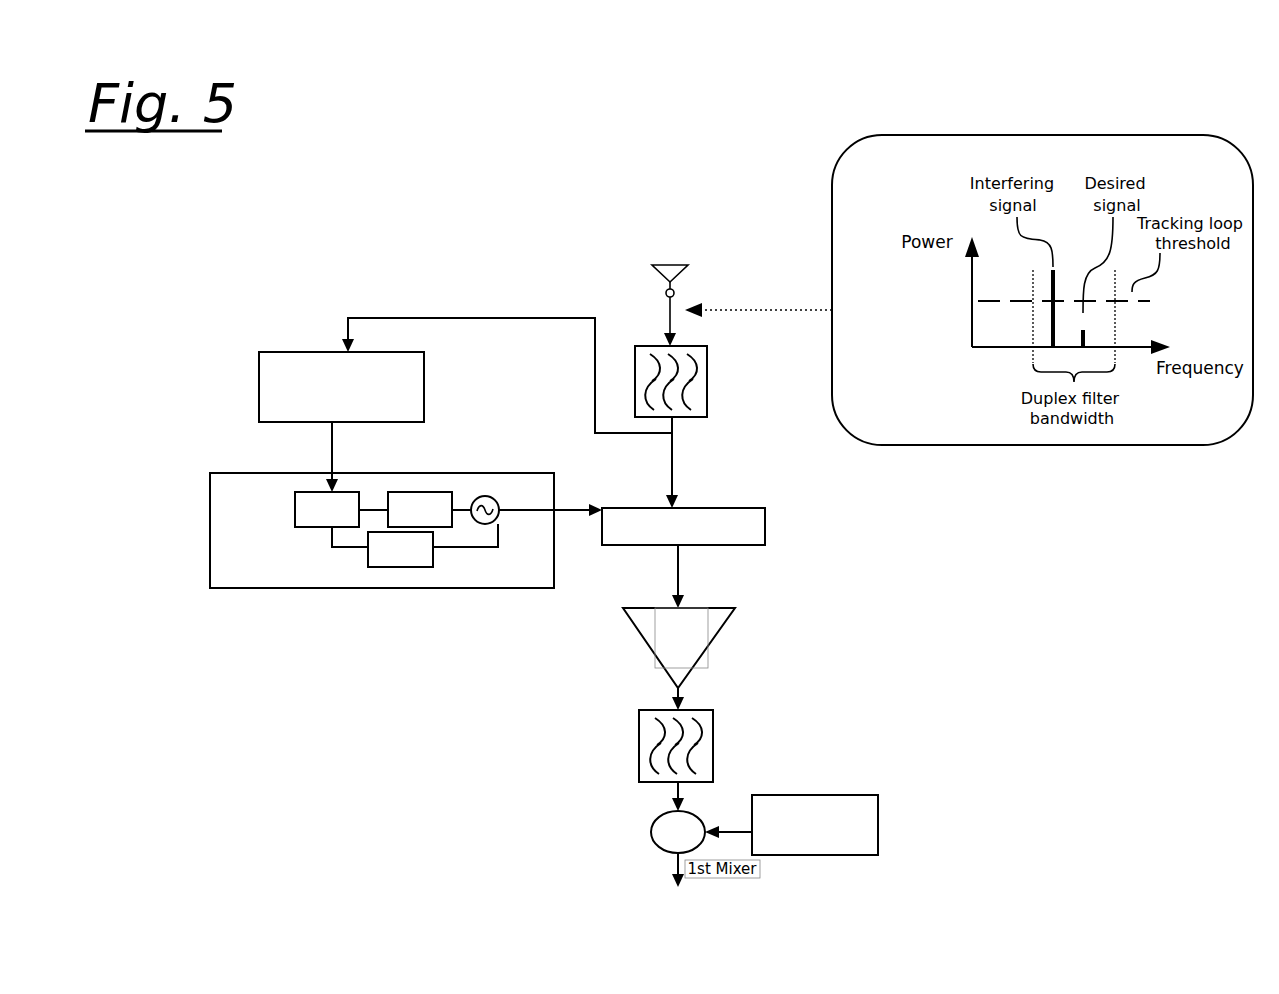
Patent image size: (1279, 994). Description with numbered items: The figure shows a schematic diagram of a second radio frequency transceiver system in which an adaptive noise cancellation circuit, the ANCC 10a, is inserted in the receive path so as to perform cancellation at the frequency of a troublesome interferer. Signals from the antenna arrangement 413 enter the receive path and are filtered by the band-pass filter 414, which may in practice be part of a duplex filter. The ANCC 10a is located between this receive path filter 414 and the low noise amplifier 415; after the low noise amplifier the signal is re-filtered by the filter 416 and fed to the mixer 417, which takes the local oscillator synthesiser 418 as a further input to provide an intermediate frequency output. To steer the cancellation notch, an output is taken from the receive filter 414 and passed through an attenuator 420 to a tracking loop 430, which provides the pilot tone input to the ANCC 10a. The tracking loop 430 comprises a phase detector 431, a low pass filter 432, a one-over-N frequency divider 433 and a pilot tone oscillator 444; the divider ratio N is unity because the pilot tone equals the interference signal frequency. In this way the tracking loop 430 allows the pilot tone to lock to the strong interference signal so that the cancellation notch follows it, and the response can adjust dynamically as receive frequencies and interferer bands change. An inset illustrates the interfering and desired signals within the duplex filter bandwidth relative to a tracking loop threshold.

The antenna arrangement 413 is at (709, 292).
The band-pass filter 414 is at (693, 381).
The low noise amplifier 415 is at (690, 648).
The filter 416 is at (699, 746).
The mixer 417 is at (691, 825).
The local oscillator synthesiser 418 is at (791, 815).
The attenuator 420 is at (341, 387).
The tracking loop 430 is at (356, 530).
The phase detector 431 is at (307, 532).
The low pass filter 432 is at (427, 492).
The 1/N frequency divider 433 is at (402, 570).
The pilot tone oscillator 444 is at (491, 488).
The ANCC 10a is at (703, 526).